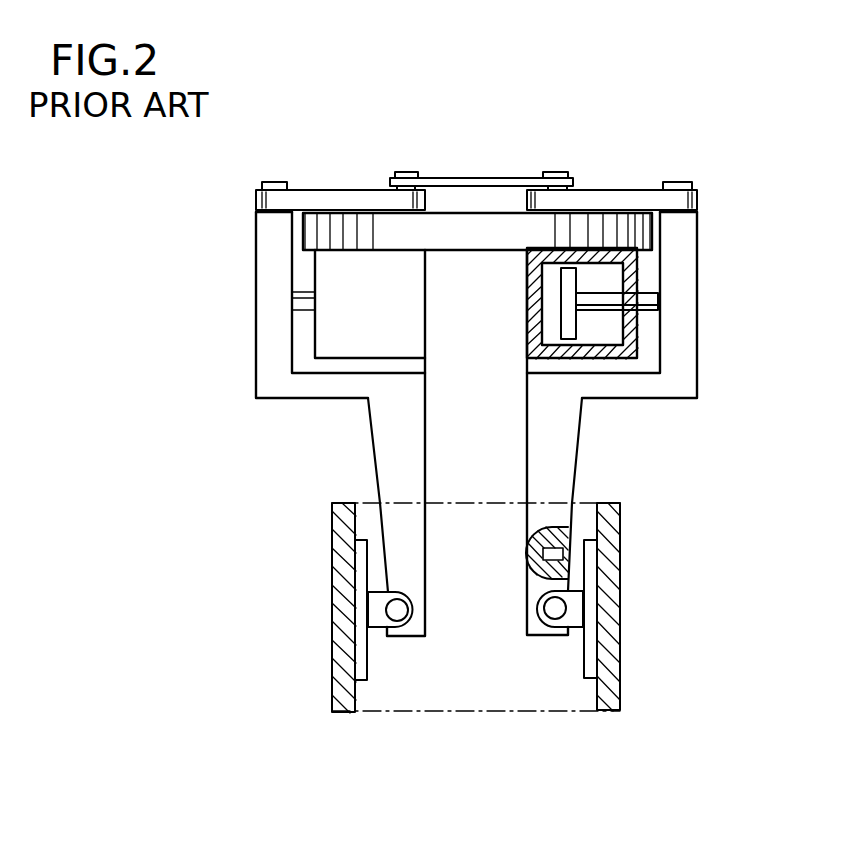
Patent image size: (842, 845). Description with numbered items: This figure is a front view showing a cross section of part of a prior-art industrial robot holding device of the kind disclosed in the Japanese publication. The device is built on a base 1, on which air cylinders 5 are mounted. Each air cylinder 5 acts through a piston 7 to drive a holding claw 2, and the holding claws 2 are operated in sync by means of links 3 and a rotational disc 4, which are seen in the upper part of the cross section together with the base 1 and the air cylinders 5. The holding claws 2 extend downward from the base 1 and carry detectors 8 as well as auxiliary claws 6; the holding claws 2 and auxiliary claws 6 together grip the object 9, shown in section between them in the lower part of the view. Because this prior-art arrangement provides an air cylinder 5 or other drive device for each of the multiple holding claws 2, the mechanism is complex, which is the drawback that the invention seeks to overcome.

The base 1 is at (635, 222).
The holding claw 2 is at (378, 457).
The link 3 is at (333, 195).
The rotational disc 4 is at (488, 180).
The air cylinder 5 is at (328, 280).
The auxiliary claw 6 is at (355, 625).
The piston 7 is at (658, 300).
The detector 8 is at (562, 554).
The object 9 is at (335, 545).